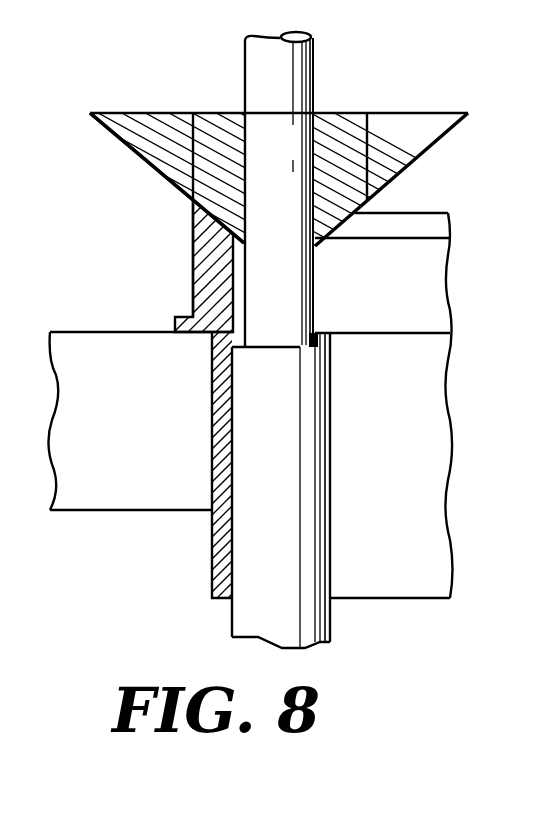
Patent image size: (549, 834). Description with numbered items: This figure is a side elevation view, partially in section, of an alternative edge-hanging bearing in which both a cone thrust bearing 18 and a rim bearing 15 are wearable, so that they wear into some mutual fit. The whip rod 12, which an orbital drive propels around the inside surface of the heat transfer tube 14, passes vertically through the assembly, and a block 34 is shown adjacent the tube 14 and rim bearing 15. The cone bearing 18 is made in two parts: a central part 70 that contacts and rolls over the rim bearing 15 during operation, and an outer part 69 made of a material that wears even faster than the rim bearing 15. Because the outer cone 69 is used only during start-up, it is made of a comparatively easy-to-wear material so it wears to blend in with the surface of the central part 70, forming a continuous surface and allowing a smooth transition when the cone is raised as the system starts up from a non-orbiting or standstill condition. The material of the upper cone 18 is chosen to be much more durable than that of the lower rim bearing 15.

The whip rod 12 is at (323, 537).
The heat transfer tube 14 is at (217, 552).
The rim bearing 15 is at (213, 267).
The cone thrust bearing 18 is at (162, 103).
The housing block 34 is at (134, 427).
The outer part of cone bearing 69 is at (146, 172).
The central part of cone bearing 70 is at (212, 185).